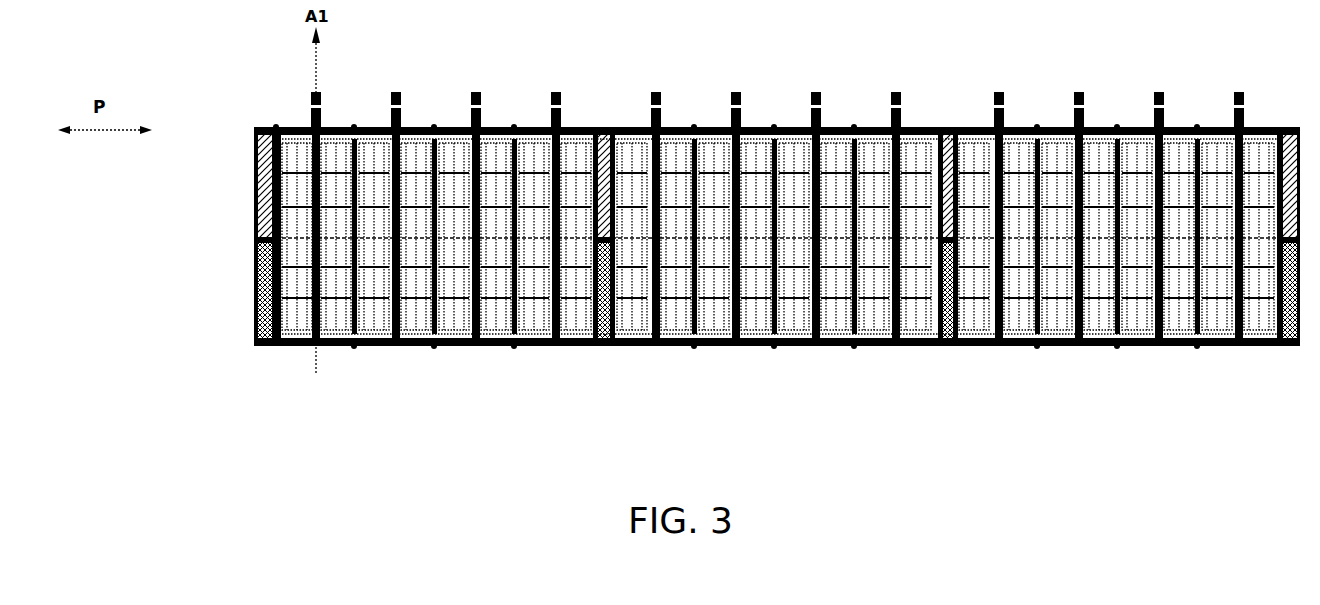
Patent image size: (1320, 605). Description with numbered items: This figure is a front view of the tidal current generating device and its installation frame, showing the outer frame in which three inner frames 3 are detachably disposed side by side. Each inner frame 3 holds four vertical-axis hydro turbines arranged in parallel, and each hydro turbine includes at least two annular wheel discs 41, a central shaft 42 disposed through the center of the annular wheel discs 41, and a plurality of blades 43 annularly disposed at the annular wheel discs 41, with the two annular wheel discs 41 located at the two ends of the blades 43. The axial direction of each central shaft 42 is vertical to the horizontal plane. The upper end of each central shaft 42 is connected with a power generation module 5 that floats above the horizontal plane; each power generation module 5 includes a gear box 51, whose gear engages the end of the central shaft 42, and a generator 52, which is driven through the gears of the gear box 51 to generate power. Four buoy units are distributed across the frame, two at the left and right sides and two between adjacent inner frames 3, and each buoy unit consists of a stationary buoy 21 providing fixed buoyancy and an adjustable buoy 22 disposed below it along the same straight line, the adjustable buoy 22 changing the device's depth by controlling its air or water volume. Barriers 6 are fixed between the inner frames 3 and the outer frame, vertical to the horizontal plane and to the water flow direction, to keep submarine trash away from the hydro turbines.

The inner frame 3 is at (297, 349).
The power generation module 5 is at (719, 87).
The barrier 6 is at (275, 348).
The stationary buoy 21 is at (255, 226).
The adjustable buoy 22 is at (255, 276).
The annular wheel disc 41 is at (258, 141).
The central shaft 42 is at (305, 192).
The blade 43 is at (258, 158).
The gear box 51 is at (311, 117).
The generator 52 is at (312, 92).